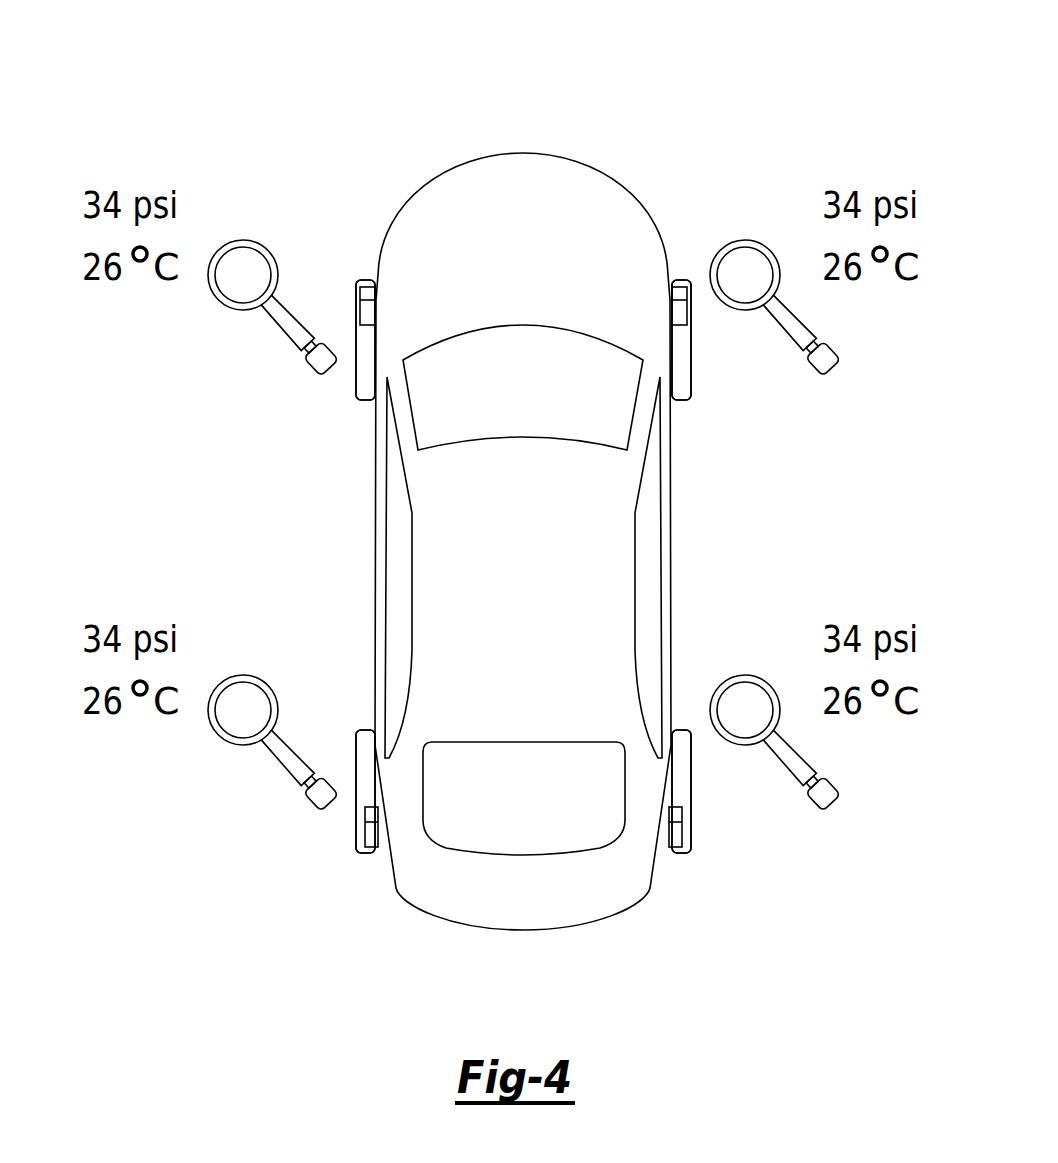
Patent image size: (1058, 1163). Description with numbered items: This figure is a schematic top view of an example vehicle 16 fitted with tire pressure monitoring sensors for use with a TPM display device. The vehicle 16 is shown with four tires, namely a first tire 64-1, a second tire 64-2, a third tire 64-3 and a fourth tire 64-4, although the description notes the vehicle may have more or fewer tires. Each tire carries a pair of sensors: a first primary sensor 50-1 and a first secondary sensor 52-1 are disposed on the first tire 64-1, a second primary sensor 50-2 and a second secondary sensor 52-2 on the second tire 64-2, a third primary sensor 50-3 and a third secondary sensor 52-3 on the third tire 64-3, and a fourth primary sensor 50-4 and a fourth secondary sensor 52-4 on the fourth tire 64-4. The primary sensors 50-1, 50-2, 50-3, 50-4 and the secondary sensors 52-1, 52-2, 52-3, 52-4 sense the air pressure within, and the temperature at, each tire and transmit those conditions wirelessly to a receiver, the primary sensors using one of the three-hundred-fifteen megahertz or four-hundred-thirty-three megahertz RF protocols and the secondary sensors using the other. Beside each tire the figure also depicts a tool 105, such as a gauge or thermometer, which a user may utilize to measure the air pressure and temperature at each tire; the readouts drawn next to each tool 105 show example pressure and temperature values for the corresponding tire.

The vehicle 16 is at (612, 98).
The first primary sensor 50-1 is at (364, 318).
The second primary sensor 50-2 is at (686, 318).
The third primary sensor 50-3 is at (676, 853).
The fourth primary sensor 50-4 is at (371, 853).
The first secondary sensor 52-1 is at (371, 287).
The second secondary sensor 52-2 is at (680, 287).
The third secondary sensor 52-3 is at (680, 815).
The fourth secondary sensor 52-4 is at (366, 812).
The first tire 64-1 is at (372, 405).
The second tire 64-2 is at (677, 405).
The third tire 64-3 is at (676, 727).
The fourth tire 64-4 is at (367, 727).
The tool 105 is at (243, 240).